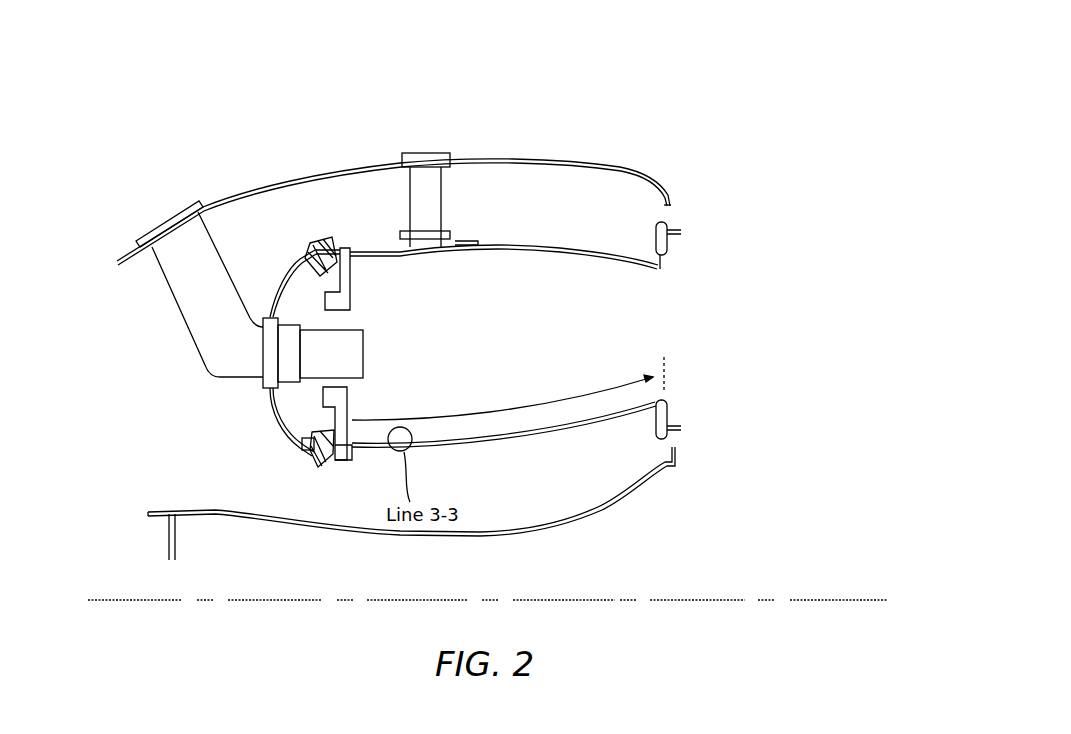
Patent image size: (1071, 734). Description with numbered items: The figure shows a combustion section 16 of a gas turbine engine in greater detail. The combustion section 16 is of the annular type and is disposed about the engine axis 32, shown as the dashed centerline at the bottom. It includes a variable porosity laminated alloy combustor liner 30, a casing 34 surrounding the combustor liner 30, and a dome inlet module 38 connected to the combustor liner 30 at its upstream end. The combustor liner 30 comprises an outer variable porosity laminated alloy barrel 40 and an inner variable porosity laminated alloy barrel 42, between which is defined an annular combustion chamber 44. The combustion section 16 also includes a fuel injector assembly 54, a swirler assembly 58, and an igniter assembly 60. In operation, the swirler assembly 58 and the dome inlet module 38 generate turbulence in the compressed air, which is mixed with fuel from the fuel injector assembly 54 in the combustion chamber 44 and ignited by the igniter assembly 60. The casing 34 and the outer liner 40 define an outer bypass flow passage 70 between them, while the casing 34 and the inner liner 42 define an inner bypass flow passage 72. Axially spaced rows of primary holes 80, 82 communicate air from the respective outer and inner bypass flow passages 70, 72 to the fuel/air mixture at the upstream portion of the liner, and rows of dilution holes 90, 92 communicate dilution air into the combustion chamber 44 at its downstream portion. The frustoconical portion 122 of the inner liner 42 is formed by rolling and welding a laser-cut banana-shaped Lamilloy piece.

The combustion section 16 is at (620, 79).
The variable porosity laminated alloy combustor liner 30 is at (540, 244).
The axis 32 is at (806, 600).
The casing 34 is at (562, 163).
The dome inlet module 38 is at (276, 412).
The outer variable porosity laminated alloy barrel 40 is at (500, 253).
The inner variable porosity laminated alloy barrel 42 is at (498, 422).
The annular combustion chamber 44 is at (472, 349).
The fuel injector assembly 54 is at (205, 272).
The swirler assembly 58 is at (352, 300).
The igniter assembly 60 is at (424, 153).
The outer bypass flow passage 70 is at (499, 214).
The inner bypass flow passage 72 is at (529, 480).
The primary holes 80 is at (378, 253).
The primary holes 82 is at (378, 450).
The dilution holes 90 is at (588, 248).
The dilution holes 92 is at (588, 432).
The portion of the inner variable porosity Lamilloy combustor liner 122 is at (600, 392).